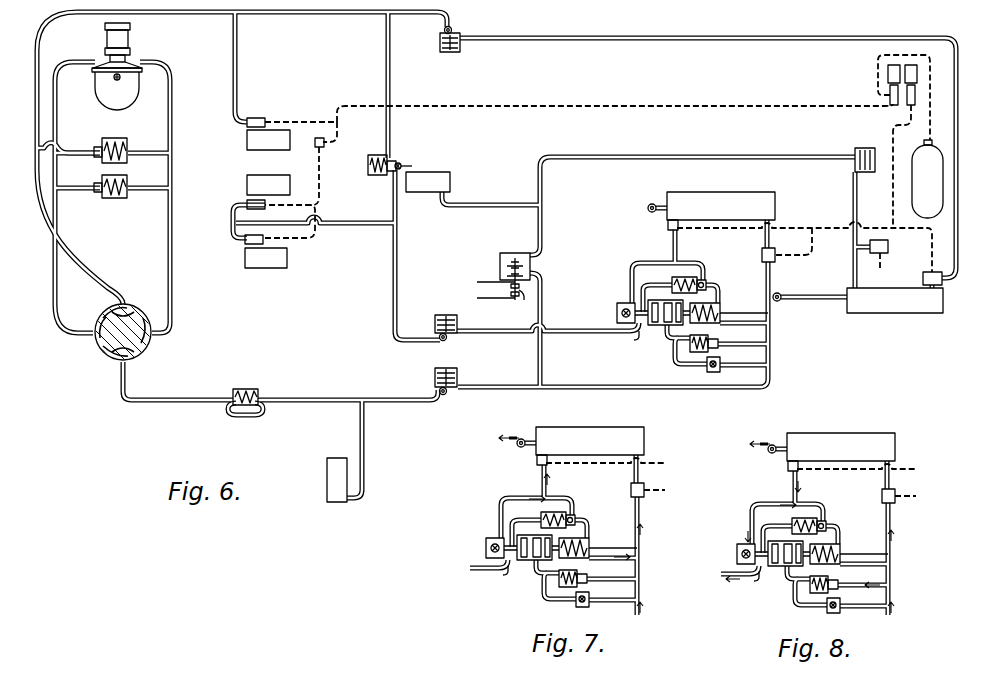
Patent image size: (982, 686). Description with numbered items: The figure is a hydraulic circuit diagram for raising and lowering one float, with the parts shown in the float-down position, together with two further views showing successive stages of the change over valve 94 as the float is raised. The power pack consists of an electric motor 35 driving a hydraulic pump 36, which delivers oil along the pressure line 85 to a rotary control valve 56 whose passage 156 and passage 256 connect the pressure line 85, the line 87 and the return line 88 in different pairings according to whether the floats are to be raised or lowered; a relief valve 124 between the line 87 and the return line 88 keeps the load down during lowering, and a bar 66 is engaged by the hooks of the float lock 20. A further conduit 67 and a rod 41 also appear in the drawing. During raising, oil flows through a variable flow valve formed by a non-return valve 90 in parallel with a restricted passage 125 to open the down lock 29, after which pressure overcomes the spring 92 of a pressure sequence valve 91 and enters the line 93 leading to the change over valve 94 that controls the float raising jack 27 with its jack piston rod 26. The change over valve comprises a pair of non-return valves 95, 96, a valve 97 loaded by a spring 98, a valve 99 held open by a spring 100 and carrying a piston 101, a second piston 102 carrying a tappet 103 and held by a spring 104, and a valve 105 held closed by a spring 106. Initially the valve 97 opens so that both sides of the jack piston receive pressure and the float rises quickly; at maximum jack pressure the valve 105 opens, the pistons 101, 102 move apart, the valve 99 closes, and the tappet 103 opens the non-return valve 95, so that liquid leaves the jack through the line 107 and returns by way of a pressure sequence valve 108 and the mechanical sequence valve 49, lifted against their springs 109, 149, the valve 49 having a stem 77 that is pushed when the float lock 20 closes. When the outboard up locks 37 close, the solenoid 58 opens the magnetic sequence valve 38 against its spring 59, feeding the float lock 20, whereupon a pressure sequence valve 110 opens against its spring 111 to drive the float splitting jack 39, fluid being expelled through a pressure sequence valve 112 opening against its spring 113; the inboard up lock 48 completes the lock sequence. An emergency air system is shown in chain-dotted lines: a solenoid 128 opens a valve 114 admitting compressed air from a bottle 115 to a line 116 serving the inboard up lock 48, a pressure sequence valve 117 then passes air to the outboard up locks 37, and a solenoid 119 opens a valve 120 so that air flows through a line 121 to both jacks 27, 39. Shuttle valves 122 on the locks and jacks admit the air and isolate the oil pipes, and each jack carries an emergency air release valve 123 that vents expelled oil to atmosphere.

In FIG. 6, the float lock 20 is at (428, 193).
In FIG. 6, the jack piston rod 26 is at (653, 204).
In FIG. 7, the jack piston rod 26 is at (518, 451).
In FIG. 8, the jack piston rod 26 is at (769, 457).
In FIG. 6, the float raising jack 27 is at (708, 192).
In FIG. 7, the float raising jack 27 is at (590, 429).
In FIG. 8, the float raising jack 27 is at (841, 435).
In FIG. 6, the down lock 29 is at (327, 471).
In FIG. 6, the electric motor 35 is at (132, 41).
In FIG. 6, the hydraulic pump 36 is at (131, 66).
In FIG. 6, the outboard up locks 37 is at (267, 221).
In FIG. 6, the magnetic sequence valve 38 is at (512, 257).
In FIG. 6, the float splitting jack 39 is at (898, 313).
In FIG. 6, the piston rod 41 is at (812, 299).
In FIG. 6, the inboard up lock 48 is at (268, 140).
In FIG. 6, the mechanical sequence valve 49 is at (102, 192).
In FIG. 6, the rotary control valve 56 is at (98, 350).
In FIG. 6, the solenoid 58 is at (518, 297).
In FIG. 6, the spring 59 is at (502, 272).
In FIG. 6, the bar 66 is at (152, 404).
In FIG. 6, the return conduit 67 is at (348, 16).
In FIG. 6, the stem 77 is at (410, 166).
In FIG. 6, the pressure line 85 is at (57, 122).
In FIG. 6, the line 87 is at (40, 45).
In FIG. 6, the return line 88 is at (171, 215).
In FIG. 6, the non-return valve 90 is at (246, 389).
In FIG. 6, the pressure sequence valve 91 is at (449, 393).
In FIG. 6, the spring 92 is at (435, 376).
In FIG. 6, the line 93 is at (498, 386).
In FIG. 7, the line 93 is at (650, 556).
In FIG. 8, the line 93 is at (901, 559).
In FIG. 6, the change over valve 94 is at (733, 300).
In FIG. 6, the non-return valve 95 is at (618, 305).
In FIG. 7, the non-return valve 95 is at (488, 539).
In FIG. 8, the non-return valve 95 is at (739, 545).
In FIG. 6, the non-return valve 96 is at (711, 368).
In FIG. 7, the non-return valve 96 is at (578, 606).
In FIG. 8, the non-return valve 96 is at (829, 612).
In FIG. 6, the valve 97 is at (706, 284).
In FIG. 7, the valve 97 is at (583, 511).
In FIG. 8, the valve 97 is at (834, 517).
In FIG. 6, the spring 98 is at (672, 283).
In FIG. 7, the spring 98 is at (545, 513).
In FIG. 8, the spring 98 is at (796, 519).
In FIG. 6, the valve 99 is at (721, 305).
In FIG. 7, the valve 99 is at (598, 543).
In FIG. 8, the valve 99 is at (849, 549).
In FIG. 6, the spring 100 is at (722, 324).
In FIG. 7, the spring 100 is at (613, 561).
In FIG. 8, the spring 100 is at (864, 567).
In FIG. 6, the piston 101 is at (668, 318).
In FIG. 7, the piston 101 is at (538, 561).
In FIG. 8, the piston 101 is at (789, 567).
In FIG. 6, the second piston 102 is at (661, 303).
In FIG. 7, the second piston 102 is at (535, 538).
In FIG. 8, the second piston 102 is at (786, 544).
In FIG. 6, the tappet 103 is at (638, 331).
In FIG. 7, the tappet 103 is at (503, 577).
In FIG. 8, the tappet 103 is at (754, 583).
In FIG. 6, the spring 104 is at (650, 317).
In FIG. 7, the spring 104 is at (516, 572).
In FIG. 8, the spring 104 is at (761, 554).
In FIG. 6, the valve 105 is at (719, 345).
In FIG. 7, the valve 105 is at (595, 581).
In FIG. 8, the valve 105 is at (846, 587).
In FIG. 6, the spring 106 is at (688, 352).
In FIG. 7, the spring 106 is at (556, 588).
In FIG. 8, the spring 106 is at (807, 594).
In FIG. 6, the line 107 is at (572, 330).
In FIG. 7, the line 107 is at (482, 561).
In FIG. 8, the line 107 is at (732, 567).
In FIG. 6, the pressure sequence valve 108 is at (449, 341).
In FIG. 6, the spring 109 is at (458, 325).
In FIG. 6, the pressure sequence valve 110 is at (692, 206).
In FIG. 6, the spring 111 is at (867, 150).
In FIG. 6, the pressure sequence valve 112 is at (457, 28).
In FIG. 6, the spring 113 is at (708, 158).
In FIG. 6, the valve 114 is at (890, 96).
In FIG. 6, the bottle 115 is at (927, 179).
In FIG. 6, the line 116 is at (615, 106).
In FIG. 6, the pressure sequence valve 117 is at (325, 148).
In FIG. 6, the solenoid 119 is at (917, 73).
In FIG. 6, the valve 120 is at (915, 93).
In FIG. 6, the line 121 is at (892, 198).
In FIG. 6, the shuttle valves 122 is at (270, 113).
In FIG. 7, the shuttle valves 122 is at (529, 468).
In FIG. 8, the shuttle valves 122 is at (780, 474).
In FIG. 6, the emergency air release valve 123 is at (776, 252).
In FIG. 7, the emergency air release valve 123 is at (652, 483).
In FIG. 8, the emergency air release valve 123 is at (903, 489).
In FIG. 6, the relief valve 124 is at (100, 156).
In FIG. 6, the restricted passage 125 is at (247, 416).
In FIG. 6, the solenoid 128 is at (888, 73).
In FIG. 6, the spring 149 is at (378, 156).
In FIG. 6, the passage 156 is at (101, 319).
In FIG. 6, the passage 256 is at (147, 348).